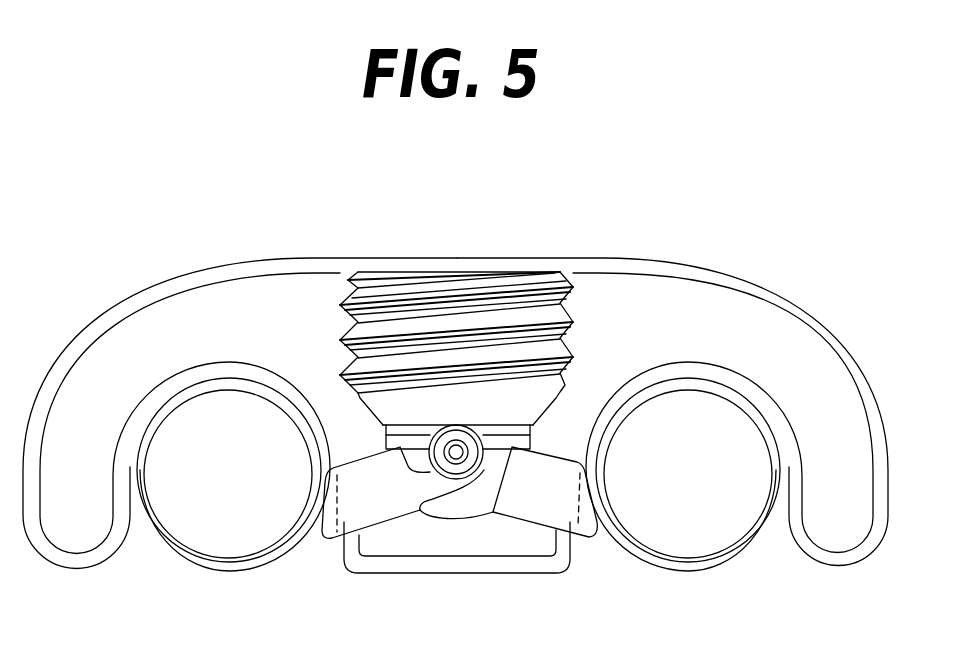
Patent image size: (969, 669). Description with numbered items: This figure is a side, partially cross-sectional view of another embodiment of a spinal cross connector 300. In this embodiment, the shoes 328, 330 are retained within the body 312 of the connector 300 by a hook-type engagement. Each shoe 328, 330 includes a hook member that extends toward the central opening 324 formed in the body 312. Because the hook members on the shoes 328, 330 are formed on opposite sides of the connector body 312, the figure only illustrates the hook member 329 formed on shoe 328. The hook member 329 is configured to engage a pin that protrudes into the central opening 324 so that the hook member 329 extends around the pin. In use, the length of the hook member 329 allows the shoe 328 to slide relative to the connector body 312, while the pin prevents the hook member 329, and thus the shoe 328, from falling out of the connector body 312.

The connector 300 is at (651, 222).
The body 312 is at (654, 345).
The central opening 324 is at (345, 258).
The shoe 328 is at (320, 532).
The hook member 329 is at (456, 456).
The shoe 330 is at (583, 523).